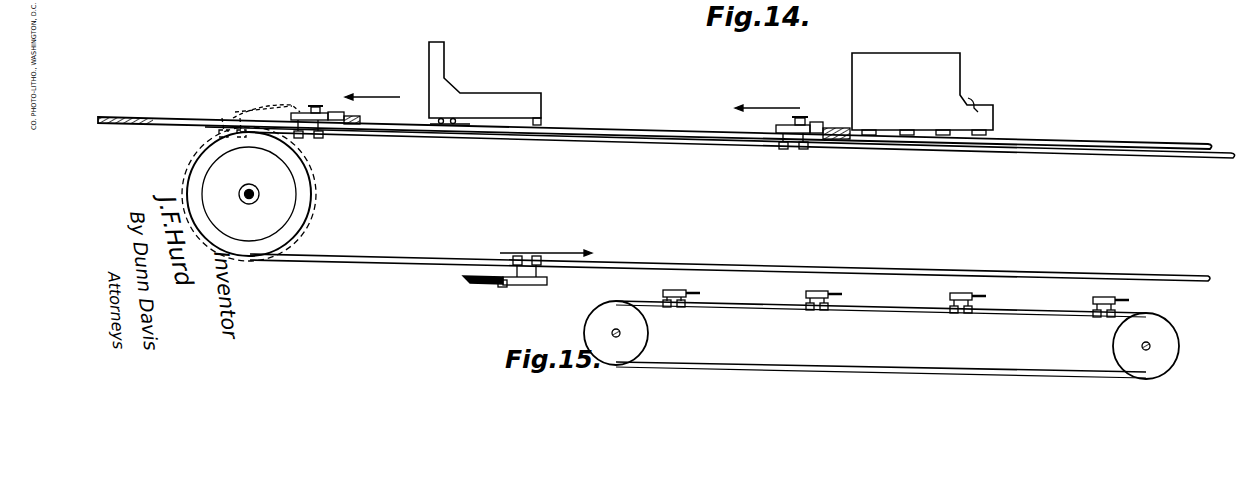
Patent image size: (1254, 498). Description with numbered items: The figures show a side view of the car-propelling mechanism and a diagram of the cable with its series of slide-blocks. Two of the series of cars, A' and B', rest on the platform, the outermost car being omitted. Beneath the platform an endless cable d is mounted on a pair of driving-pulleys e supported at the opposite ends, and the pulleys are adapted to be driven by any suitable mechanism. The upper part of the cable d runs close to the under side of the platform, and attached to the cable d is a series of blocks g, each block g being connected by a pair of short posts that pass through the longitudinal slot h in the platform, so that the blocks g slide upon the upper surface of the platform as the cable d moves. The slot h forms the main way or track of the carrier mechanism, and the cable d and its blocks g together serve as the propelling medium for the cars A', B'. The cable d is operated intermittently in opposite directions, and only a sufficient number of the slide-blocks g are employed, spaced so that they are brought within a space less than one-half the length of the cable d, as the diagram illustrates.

In FIG. 14, the car A' is at (485, 83).
In FIG. 14, the car B' is at (922, 94).
In FIG. 14, the longitudinal slot h is at (664, 126).
In FIG. 14, the endless cable d is at (646, 143).
In FIG. 15, the endless cable d is at (772, 304).
In FIG. 14, the driving-pulley e is at (303, 198).
In FIG. 15, the driving-pulley e is at (881, 340).
In FIG. 14, the slide-block g is at (229, 118).
In FIG. 15, the slide-block g is at (673, 290).